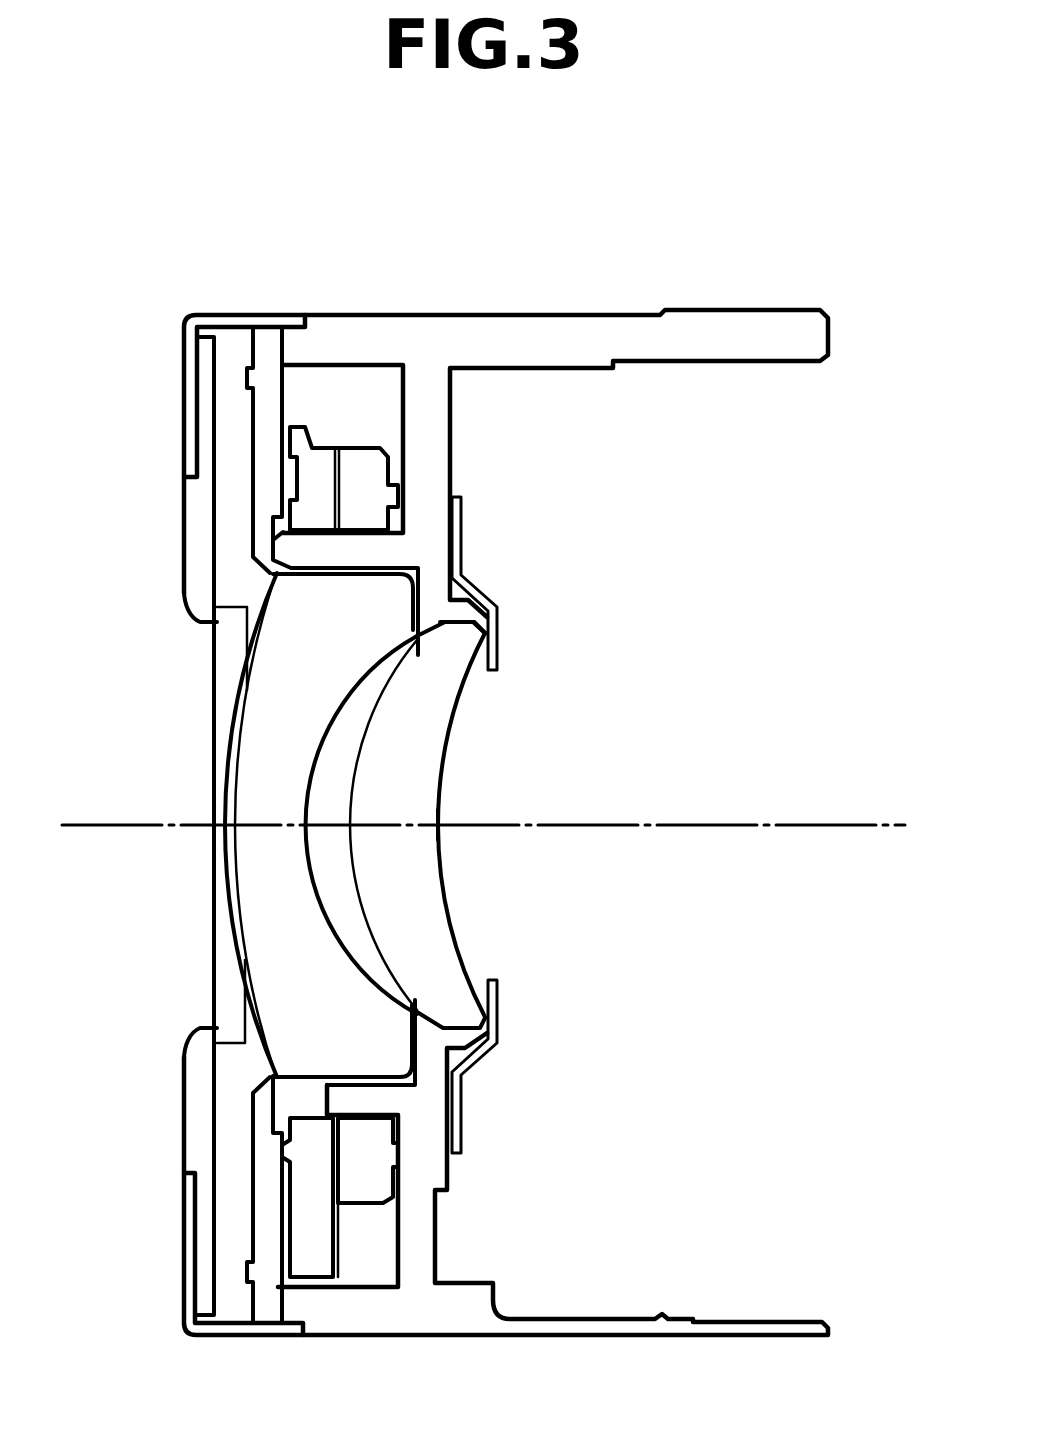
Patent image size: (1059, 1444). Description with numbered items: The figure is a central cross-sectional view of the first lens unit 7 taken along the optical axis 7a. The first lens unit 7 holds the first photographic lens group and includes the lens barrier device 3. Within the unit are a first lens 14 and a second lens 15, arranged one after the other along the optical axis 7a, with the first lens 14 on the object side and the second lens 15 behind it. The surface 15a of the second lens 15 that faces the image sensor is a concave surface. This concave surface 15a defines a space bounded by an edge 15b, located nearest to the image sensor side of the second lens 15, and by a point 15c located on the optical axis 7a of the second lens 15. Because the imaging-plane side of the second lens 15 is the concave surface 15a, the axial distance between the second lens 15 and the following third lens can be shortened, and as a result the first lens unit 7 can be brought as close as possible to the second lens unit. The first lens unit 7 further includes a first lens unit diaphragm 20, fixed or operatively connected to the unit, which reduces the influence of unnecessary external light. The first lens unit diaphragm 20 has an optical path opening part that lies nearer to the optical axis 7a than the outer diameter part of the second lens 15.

The lens barrier device 3 is at (300, 1185).
The first lens unit 7 is at (545, 335).
The optical axis 7a is at (850, 820).
The first lens 14 is at (273, 952).
The second lens 15 is at (498, 825).
The concave surface 15a is at (445, 903).
The edge 15b is at (497, 638).
The point 15c is at (440, 826).
The first lens unit diaphragm 20 is at (498, 632).